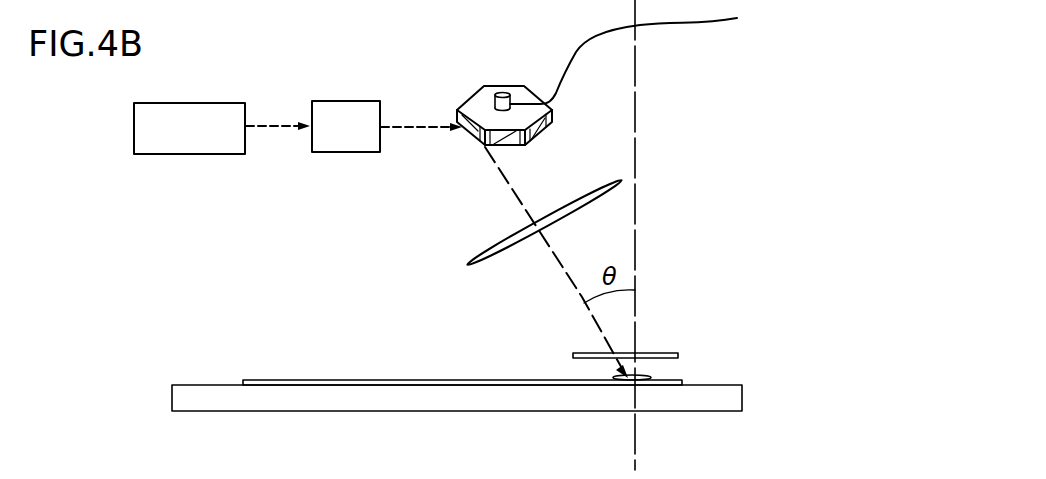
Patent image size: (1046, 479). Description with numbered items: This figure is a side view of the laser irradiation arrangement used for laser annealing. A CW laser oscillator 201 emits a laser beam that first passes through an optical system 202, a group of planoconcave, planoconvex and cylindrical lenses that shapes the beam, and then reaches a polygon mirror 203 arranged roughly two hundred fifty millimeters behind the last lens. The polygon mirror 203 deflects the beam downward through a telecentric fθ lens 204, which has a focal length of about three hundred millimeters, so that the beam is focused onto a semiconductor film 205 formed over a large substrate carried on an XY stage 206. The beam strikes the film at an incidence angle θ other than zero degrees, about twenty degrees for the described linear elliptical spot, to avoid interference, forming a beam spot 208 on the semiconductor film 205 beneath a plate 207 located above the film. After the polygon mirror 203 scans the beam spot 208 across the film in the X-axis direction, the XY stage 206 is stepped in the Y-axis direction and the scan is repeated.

The CW laser oscillator 201 is at (188, 103).
The optical system 202 is at (353, 103).
The polygon mirror 203 is at (497, 86).
The telecentric fθ lens 204 is at (616, 192).
The semiconductor film 205 is at (318, 380).
The XY stage 206 is at (207, 385).
The cover plate / reference plate 207 is at (675, 353).
The beam spot 208 is at (613, 375).